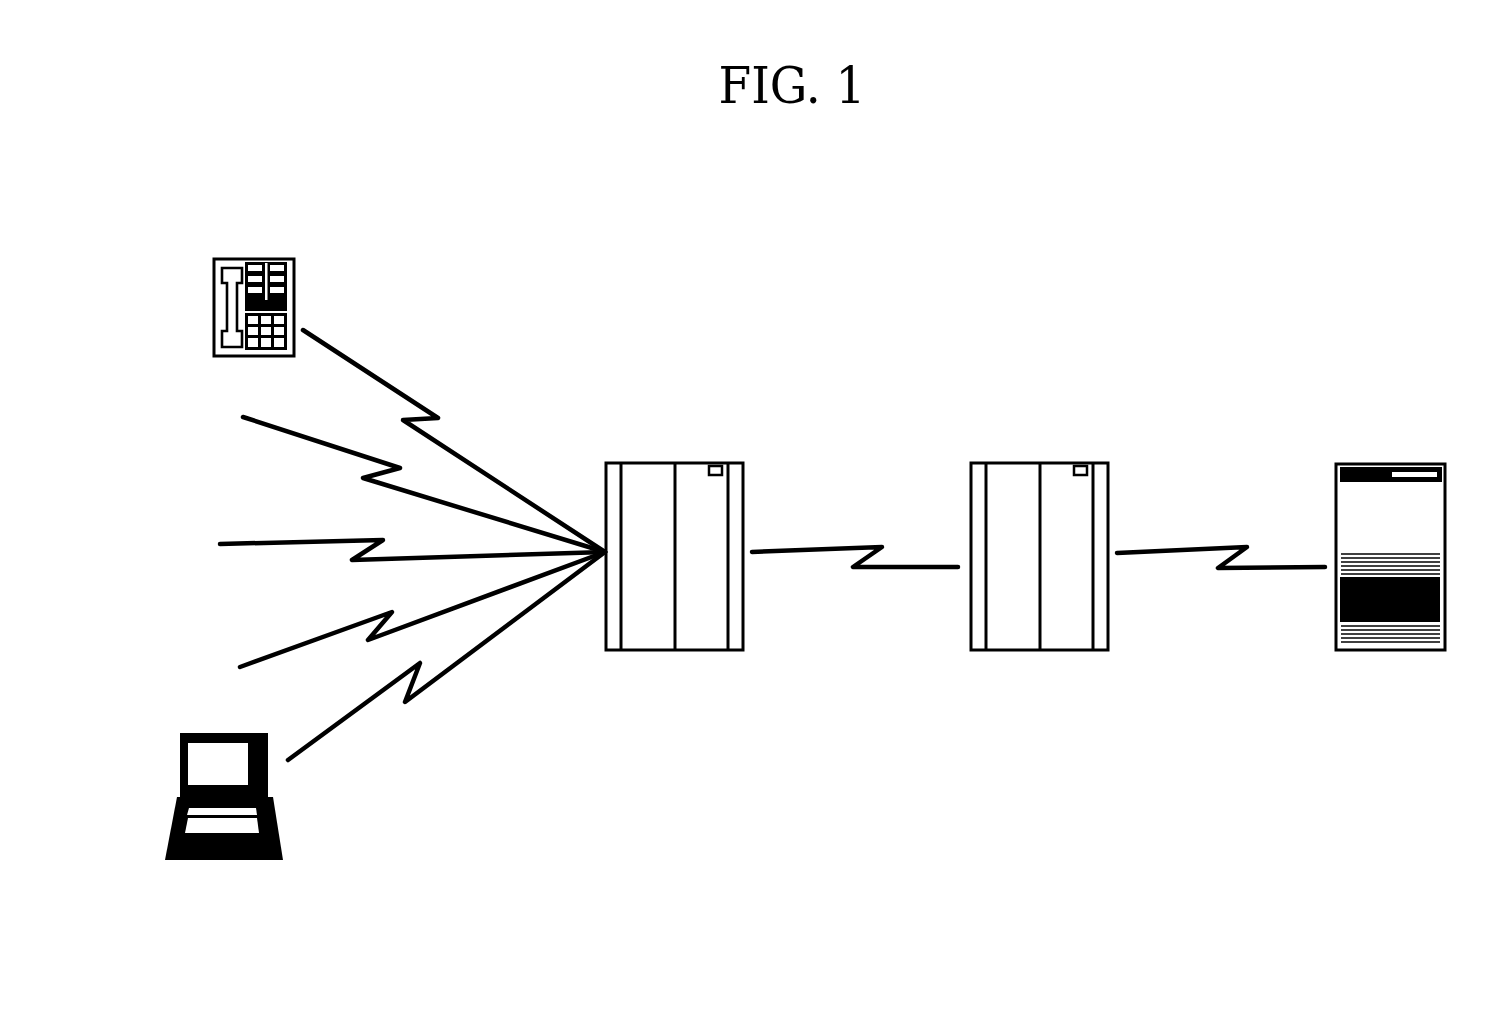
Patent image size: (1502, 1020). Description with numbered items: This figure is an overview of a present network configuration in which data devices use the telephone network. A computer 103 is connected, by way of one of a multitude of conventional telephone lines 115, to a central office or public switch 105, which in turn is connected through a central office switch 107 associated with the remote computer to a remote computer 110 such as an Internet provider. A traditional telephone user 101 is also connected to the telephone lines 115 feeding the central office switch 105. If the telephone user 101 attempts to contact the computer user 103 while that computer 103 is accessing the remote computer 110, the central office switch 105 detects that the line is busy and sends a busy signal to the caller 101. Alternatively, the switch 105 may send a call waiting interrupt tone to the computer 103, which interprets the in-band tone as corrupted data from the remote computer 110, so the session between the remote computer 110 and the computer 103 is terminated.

The telephone user 101 is at (254, 310).
The computer 103 is at (224, 799).
The central office switch 105 is at (671, 562).
The central office switch 107 is at (1041, 562).
The remote computer 110 is at (1390, 561).
The telephone lines 115 is at (412, 545).